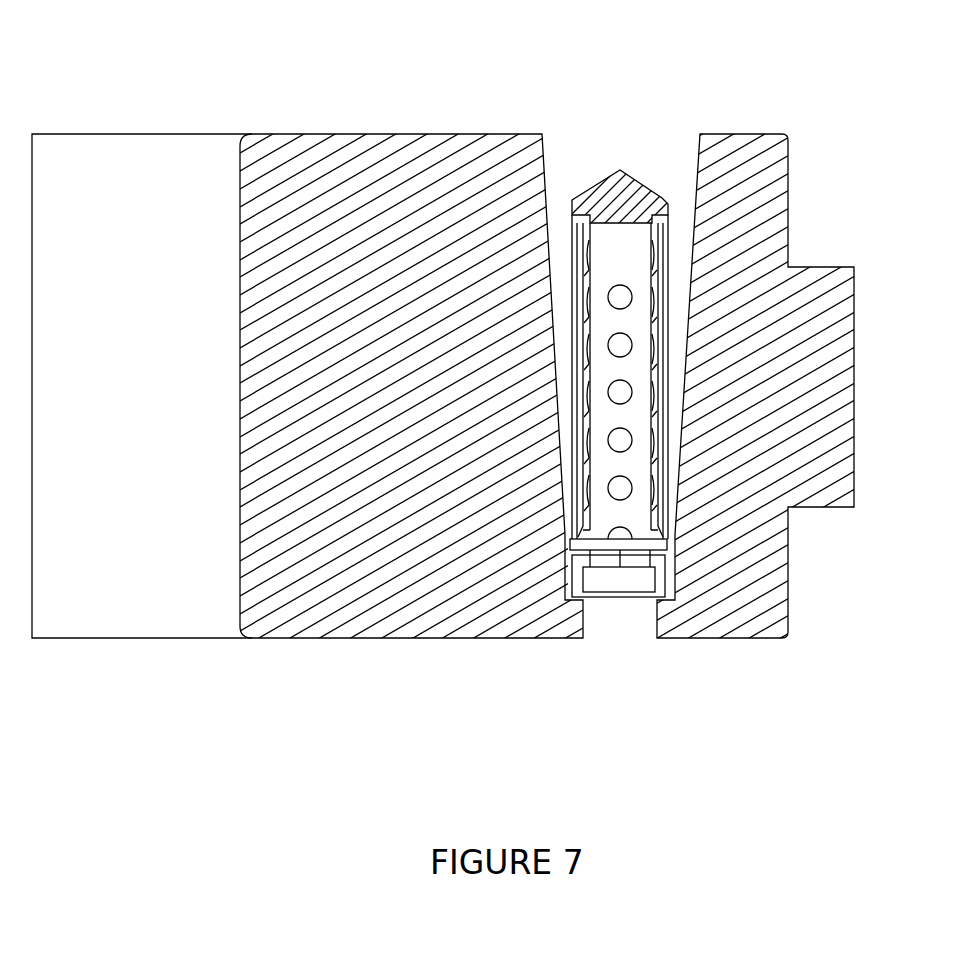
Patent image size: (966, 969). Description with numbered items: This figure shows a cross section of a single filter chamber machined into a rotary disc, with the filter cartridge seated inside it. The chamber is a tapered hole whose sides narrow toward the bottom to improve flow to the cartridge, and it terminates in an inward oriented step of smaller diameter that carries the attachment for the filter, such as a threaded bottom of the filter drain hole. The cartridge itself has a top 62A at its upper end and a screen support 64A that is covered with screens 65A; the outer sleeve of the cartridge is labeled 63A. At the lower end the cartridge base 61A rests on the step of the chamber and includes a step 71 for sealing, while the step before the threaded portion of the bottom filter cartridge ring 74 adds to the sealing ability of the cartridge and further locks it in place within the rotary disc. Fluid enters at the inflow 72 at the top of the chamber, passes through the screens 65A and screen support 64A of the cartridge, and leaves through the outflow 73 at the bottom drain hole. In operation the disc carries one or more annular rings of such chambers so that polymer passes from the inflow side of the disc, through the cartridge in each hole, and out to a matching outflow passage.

The cartridge base 61A is at (658, 562).
The top 62A is at (628, 200).
The outer sleeve 63A is at (572, 212).
The screen support 64A is at (648, 278).
The screens 65A is at (665, 355).
The base plate 71 is at (566, 547).
The inflow 72 is at (616, 82).
The outflow 73 is at (620, 722).
The step before the threaded portion of the bottom filter cartridge ring 74 is at (576, 596).